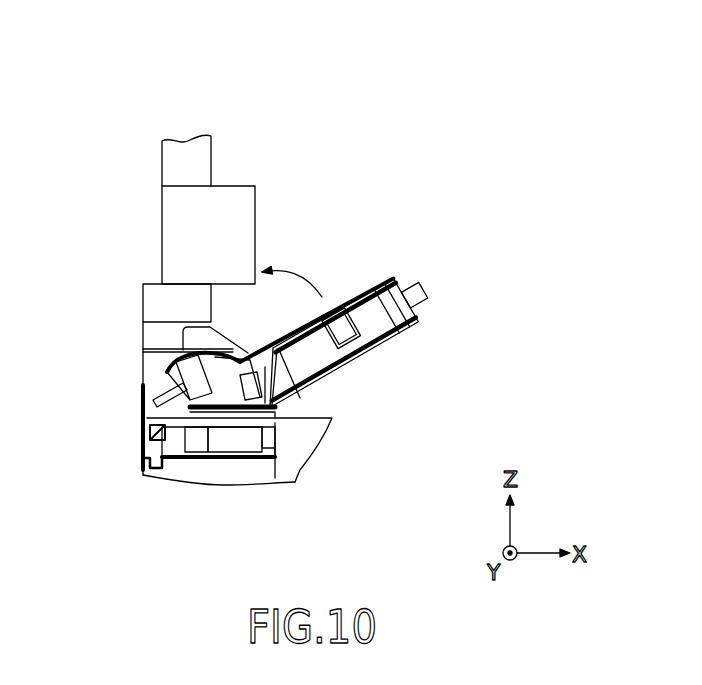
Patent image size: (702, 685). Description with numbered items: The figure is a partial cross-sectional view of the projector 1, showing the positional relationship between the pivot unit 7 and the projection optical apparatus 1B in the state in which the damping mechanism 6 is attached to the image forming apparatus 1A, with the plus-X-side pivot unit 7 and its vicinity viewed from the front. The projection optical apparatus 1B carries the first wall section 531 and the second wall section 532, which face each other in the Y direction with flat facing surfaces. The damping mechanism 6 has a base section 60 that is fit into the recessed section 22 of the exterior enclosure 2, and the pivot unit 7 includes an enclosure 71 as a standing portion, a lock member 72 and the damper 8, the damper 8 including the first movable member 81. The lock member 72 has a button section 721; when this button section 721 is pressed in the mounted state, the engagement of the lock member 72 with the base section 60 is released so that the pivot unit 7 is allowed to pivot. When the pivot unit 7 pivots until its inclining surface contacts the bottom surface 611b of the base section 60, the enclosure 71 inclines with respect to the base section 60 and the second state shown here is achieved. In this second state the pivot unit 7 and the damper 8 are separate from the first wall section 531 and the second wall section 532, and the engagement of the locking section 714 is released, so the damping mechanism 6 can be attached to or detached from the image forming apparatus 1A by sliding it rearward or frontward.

The projector 1 is at (407, 87).
The projection optical apparatus 1B is at (143, 227).
The second wall section 532 is at (143, 235).
The first wall section 531 is at (165, 232).
The damping mechanism 6 is at (308, 312).
The enclosure 71 is at (301, 343).
The pivot unit 7 is at (385, 340).
The first movable member 81 is at (351, 291).
The damper 8 is at (345, 320).
The button section 721 is at (472, 301).
The lock member 72 is at (427, 300).
The locking section 714 is at (152, 394).
The exterior enclosure 2 is at (272, 466).
The image forming apparatus 1A is at (272, 466).
The recessed section 22 is at (150, 430).
The bottom surface 611b is at (248, 477).
The base section 60 is at (232, 420).